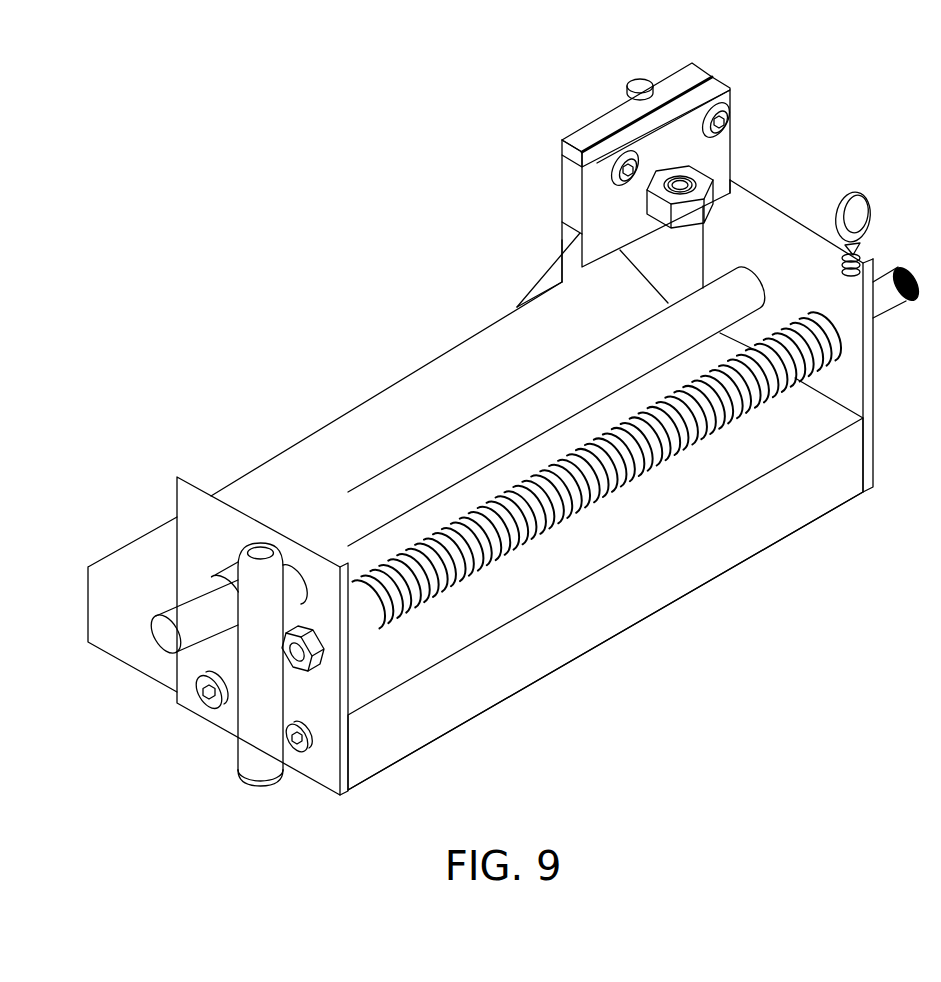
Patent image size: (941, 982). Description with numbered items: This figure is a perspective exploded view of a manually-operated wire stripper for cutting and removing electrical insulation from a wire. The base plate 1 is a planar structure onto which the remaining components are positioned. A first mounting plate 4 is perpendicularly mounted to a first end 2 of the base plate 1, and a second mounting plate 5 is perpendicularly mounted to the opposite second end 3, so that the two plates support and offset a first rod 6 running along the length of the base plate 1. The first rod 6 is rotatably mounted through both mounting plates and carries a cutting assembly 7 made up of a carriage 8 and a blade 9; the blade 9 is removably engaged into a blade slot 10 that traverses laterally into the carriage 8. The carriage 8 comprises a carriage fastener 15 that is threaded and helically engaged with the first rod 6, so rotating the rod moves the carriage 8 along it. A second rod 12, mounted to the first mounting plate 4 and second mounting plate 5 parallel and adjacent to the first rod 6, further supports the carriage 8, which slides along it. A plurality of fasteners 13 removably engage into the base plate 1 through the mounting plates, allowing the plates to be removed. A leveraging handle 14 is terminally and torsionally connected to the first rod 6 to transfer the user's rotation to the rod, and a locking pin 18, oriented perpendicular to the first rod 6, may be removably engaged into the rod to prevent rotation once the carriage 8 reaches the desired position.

The base plate 1 is at (649, 624).
The first end 2 is at (862, 456).
The second end 3 is at (104, 613).
The first mounting plate 4 is at (773, 209).
The second mounting plate 5 is at (186, 479).
The first rod 6 is at (723, 434).
The cutting assembly 7 is at (737, 147).
The carriage 8 is at (584, 131).
The blade 9 is at (548, 277).
The blade slot 10 is at (684, 85).
The second rod 12 is at (371, 487).
The plurality of fasteners 13 is at (197, 702).
The leveraging handle 14 is at (240, 754).
The carriage fastener 15 is at (706, 208).
The locking pin 18 is at (854, 201).